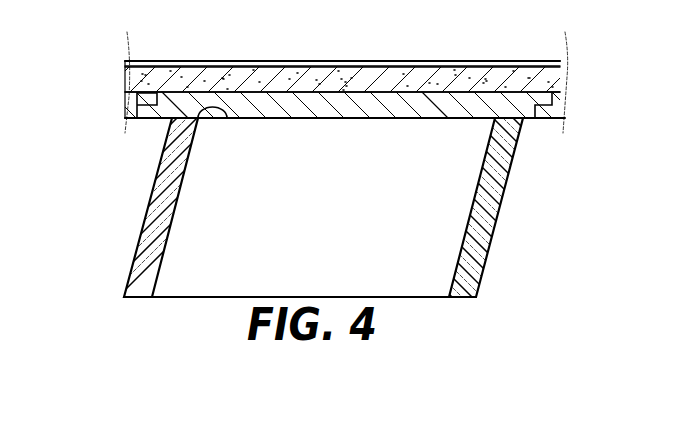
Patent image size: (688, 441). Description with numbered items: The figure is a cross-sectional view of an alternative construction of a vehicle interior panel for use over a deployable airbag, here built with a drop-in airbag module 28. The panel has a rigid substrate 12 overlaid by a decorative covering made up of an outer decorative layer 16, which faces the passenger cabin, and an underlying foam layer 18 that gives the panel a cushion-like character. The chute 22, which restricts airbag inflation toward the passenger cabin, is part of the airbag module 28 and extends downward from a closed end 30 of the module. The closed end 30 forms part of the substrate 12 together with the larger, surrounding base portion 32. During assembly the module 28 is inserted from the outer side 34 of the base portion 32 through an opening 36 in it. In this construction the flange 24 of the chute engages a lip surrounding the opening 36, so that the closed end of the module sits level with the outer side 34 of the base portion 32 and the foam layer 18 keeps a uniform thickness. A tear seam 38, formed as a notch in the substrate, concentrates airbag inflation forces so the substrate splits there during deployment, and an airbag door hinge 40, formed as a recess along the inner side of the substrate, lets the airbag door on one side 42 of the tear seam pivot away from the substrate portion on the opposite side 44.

The substrate 12 is at (310, 112).
The outer decorative layer 16 is at (287, 62).
The foam layer 18 is at (408, 78).
The chute 22 is at (458, 265).
The flange 24 is at (542, 122).
The drop-in airbag module 28 is at (130, 250).
The closed end 30 is at (380, 112).
The base portion 32 is at (142, 120).
The outer side 34 is at (132, 90).
The opening 36 is at (155, 110).
The tear seam 38 is at (481, 113).
The airbag door hinge 40 is at (204, 123).
The one side 42 is at (445, 107).
The opposite side 44 is at (500, 103).